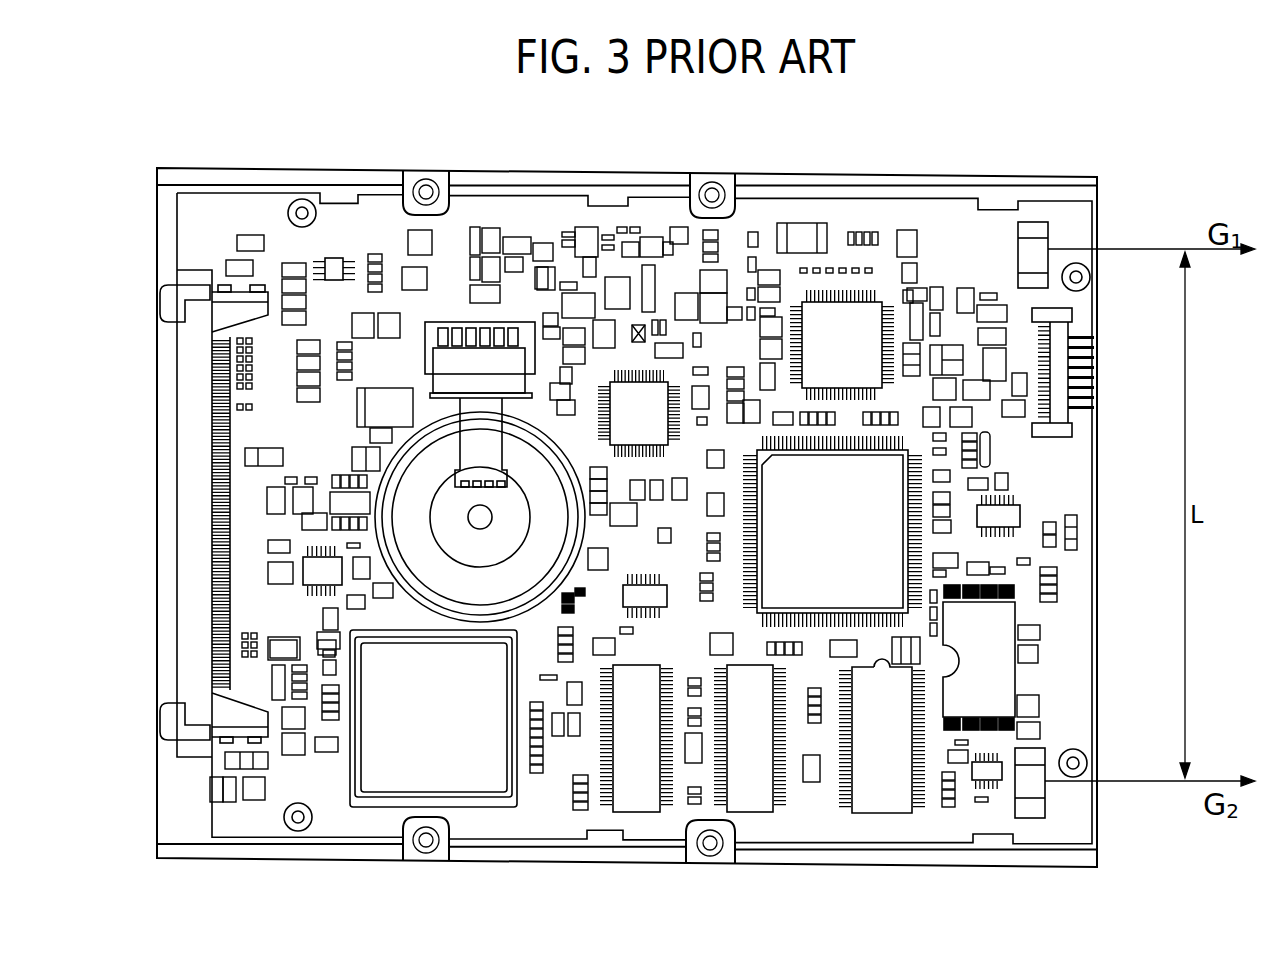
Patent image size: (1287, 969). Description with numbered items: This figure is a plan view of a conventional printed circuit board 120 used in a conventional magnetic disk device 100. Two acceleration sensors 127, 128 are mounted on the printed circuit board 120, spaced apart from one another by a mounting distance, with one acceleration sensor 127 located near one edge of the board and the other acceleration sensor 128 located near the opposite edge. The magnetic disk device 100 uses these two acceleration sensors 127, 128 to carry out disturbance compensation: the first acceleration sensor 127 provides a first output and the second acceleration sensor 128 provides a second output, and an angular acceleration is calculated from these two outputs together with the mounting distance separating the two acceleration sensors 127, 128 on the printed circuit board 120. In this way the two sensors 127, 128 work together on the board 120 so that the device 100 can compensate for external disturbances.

The magnetic disk device 100 is at (414, 158).
The printed circuit board 120 is at (556, 210).
The acceleration sensor 127 is at (1020, 240).
The acceleration sensor 128 is at (1013, 798).